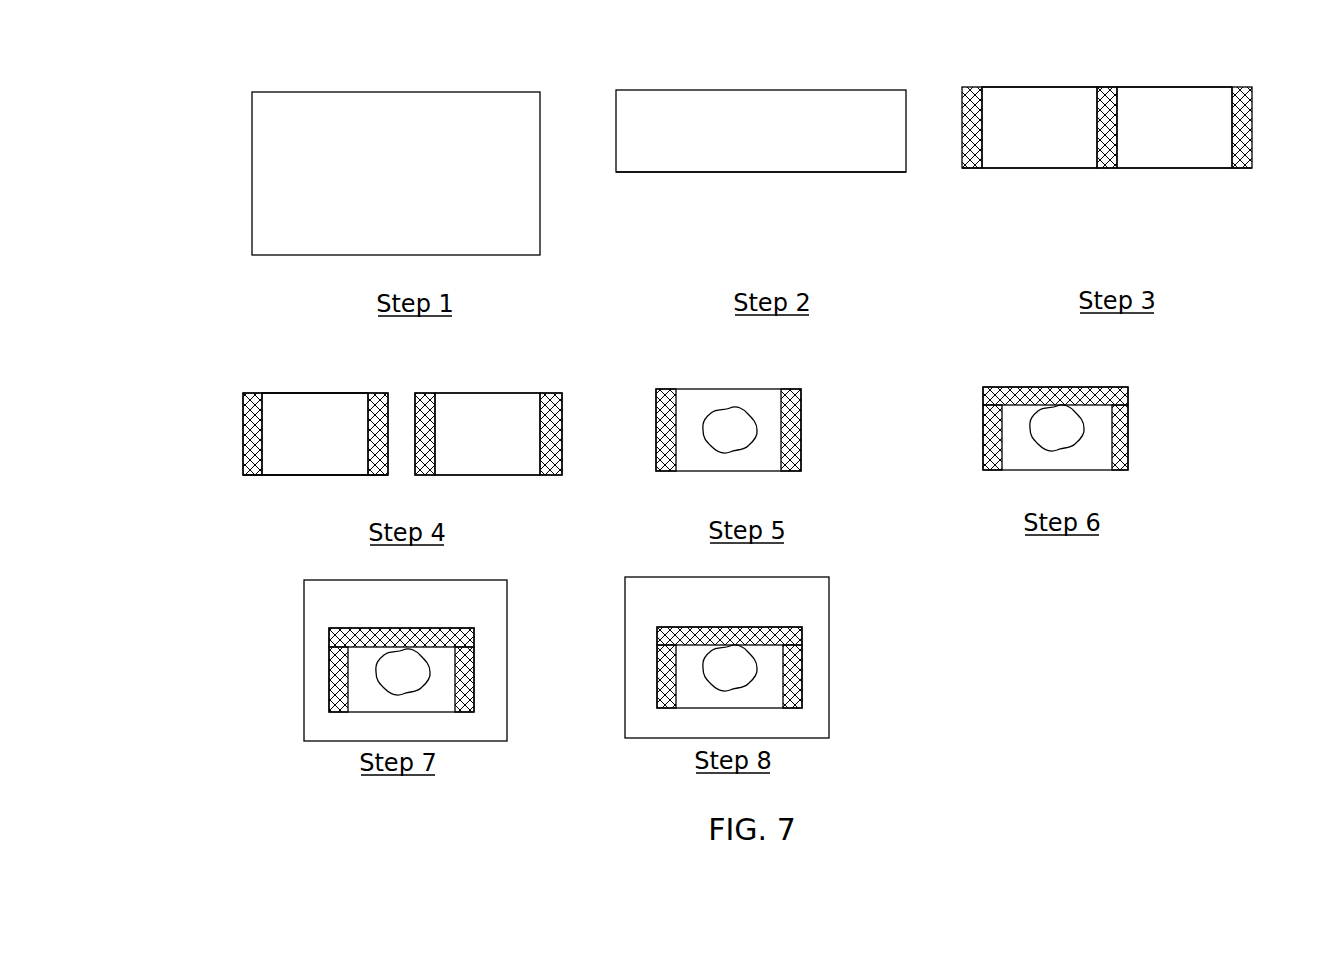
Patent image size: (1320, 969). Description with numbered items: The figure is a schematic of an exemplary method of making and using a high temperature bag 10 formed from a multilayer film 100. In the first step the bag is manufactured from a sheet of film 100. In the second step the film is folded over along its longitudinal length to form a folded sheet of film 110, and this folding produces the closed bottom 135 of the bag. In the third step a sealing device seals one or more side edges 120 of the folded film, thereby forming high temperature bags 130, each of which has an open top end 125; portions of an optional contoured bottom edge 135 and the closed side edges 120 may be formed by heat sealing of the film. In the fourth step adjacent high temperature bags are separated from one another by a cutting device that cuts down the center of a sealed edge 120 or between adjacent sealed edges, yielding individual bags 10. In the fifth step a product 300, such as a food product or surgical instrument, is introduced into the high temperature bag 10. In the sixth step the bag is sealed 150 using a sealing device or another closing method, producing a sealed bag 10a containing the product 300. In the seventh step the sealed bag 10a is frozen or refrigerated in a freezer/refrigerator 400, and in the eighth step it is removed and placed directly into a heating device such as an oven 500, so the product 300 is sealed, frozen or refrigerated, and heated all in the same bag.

The multilayer film 100 is at (379, 194).
The folded sheet of film 110 is at (734, 150).
The side edges 120 is at (962, 100).
The open top end 125 is at (1185, 87).
The high temperature bags 130 is at (1011, 135).
The closed bottom 135 is at (741, 177).
The high temperature bag 10 is at (245, 375).
The sealed bag 10a is at (1140, 368).
The seal 150 is at (1127, 398).
The product 300 is at (730, 550).
The freezer/refrigerator 400 is at (293, 645).
The oven 500 is at (852, 640).